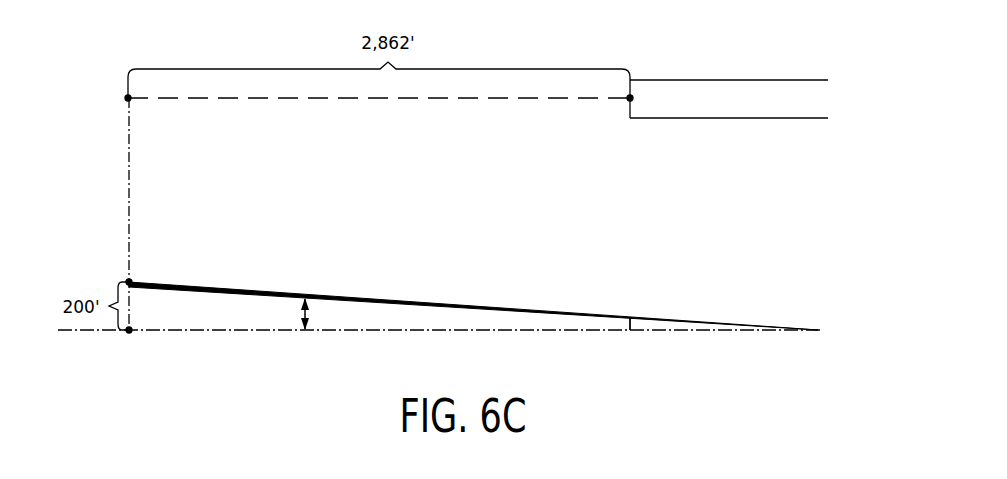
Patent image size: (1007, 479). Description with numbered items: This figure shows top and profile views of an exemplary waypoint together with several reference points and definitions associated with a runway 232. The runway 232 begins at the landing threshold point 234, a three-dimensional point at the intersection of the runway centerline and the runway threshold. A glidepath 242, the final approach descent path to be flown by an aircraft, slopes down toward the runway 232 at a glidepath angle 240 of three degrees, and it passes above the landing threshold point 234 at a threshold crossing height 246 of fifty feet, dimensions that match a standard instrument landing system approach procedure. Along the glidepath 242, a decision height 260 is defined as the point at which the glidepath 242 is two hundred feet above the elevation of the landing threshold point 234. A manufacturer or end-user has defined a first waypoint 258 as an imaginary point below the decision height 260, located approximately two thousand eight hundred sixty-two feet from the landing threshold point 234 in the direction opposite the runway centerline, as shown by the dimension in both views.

The runway 232 is at (721, 107).
The landing threshold point (LTP) 234 is at (626, 102).
The glidepath angle (GPA) 240 is at (228, 313).
The glidepath 242 is at (356, 296).
The threshold crossing height (TCH) 246 is at (629, 338).
The first waypoint 258 is at (134, 102).
The decision height (DH) 260 is at (135, 279).